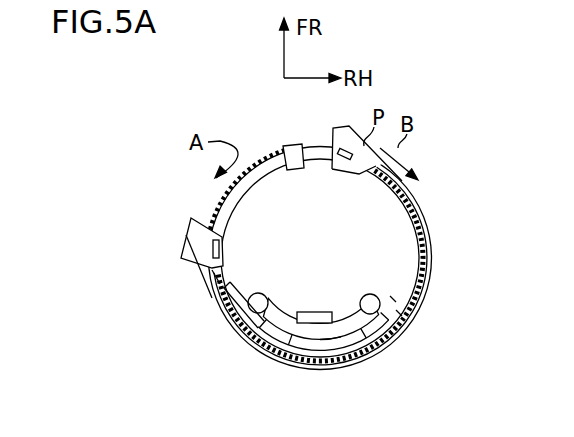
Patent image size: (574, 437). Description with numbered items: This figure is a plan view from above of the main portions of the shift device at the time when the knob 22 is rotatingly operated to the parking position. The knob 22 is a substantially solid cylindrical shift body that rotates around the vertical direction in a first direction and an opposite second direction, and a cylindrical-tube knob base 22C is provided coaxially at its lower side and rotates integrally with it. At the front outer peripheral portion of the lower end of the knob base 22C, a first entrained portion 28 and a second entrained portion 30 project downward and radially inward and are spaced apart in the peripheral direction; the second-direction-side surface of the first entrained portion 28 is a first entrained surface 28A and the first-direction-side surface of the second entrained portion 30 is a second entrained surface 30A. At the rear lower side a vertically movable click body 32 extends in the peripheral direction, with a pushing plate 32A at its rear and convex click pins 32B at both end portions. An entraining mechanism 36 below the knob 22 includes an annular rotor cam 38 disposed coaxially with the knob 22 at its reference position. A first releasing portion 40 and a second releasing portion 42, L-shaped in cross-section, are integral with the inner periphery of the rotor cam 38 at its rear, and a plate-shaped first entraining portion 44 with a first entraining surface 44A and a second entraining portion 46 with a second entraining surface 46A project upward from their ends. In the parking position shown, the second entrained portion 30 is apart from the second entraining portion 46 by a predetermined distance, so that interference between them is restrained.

The knob 22 is at (192, 217).
The knob base 22C is at (334, 130).
The first entrained portion 28 is at (333, 172).
The first entrained surface 28A is at (357, 175).
The second entrained portion 30 is at (224, 237).
The second entrained surface 30A is at (228, 266).
The click body 32 is at (288, 328).
The pushing plate 32A is at (335, 342).
The click pins 32B is at (370, 294).
The entraining mechanism 36 is at (268, 153).
The rotor cam 38 is at (242, 169).
The first releasing portion 40 is at (232, 330).
The second releasing portion 42 is at (393, 298).
The first entraining portion 44 is at (390, 320).
The first entraining surface 44A is at (398, 313).
The second entraining portion 46 is at (215, 290).
The second entraining surface 46A is at (218, 278).